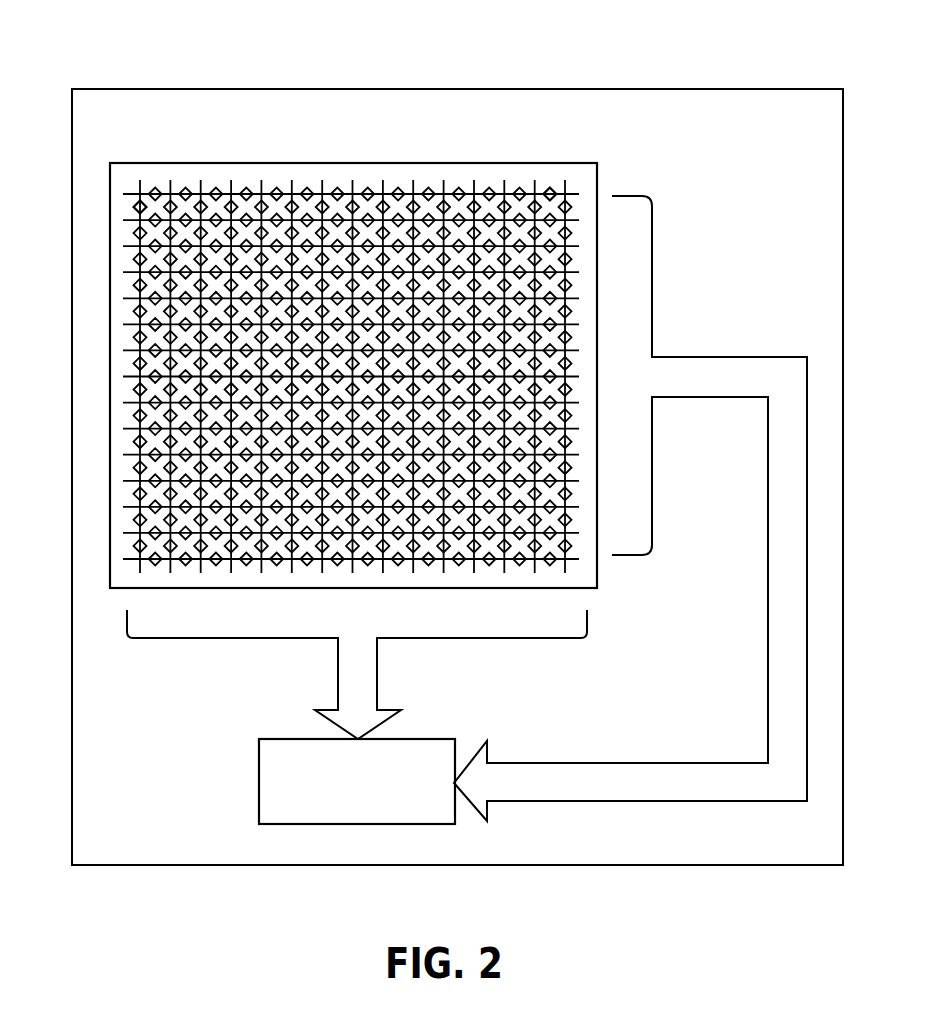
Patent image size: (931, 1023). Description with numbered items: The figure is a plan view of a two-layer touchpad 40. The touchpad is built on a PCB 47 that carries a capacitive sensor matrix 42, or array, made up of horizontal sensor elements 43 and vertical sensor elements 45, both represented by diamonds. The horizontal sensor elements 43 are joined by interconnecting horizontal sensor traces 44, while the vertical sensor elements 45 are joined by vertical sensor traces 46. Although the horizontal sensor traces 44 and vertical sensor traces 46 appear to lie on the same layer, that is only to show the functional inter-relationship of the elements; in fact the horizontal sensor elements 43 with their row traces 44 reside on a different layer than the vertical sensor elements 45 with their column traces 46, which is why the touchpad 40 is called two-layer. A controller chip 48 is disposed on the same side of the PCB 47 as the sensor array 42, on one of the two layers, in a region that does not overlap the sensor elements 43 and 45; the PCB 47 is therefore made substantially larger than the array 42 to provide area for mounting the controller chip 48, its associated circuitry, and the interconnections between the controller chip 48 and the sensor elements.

The two-layer touchpad 40 is at (31, 530).
The capacitive sensor matrix 42 is at (350, 144).
The horizontal sensor elements 43 is at (550, 185).
The horizontal sensor traces 44 is at (652, 240).
The vertical sensor elements 45 is at (133, 207).
The vertical sensor traces 46 is at (183, 640).
The PCB 47 is at (592, 89).
The controller chip 48 is at (259, 772).